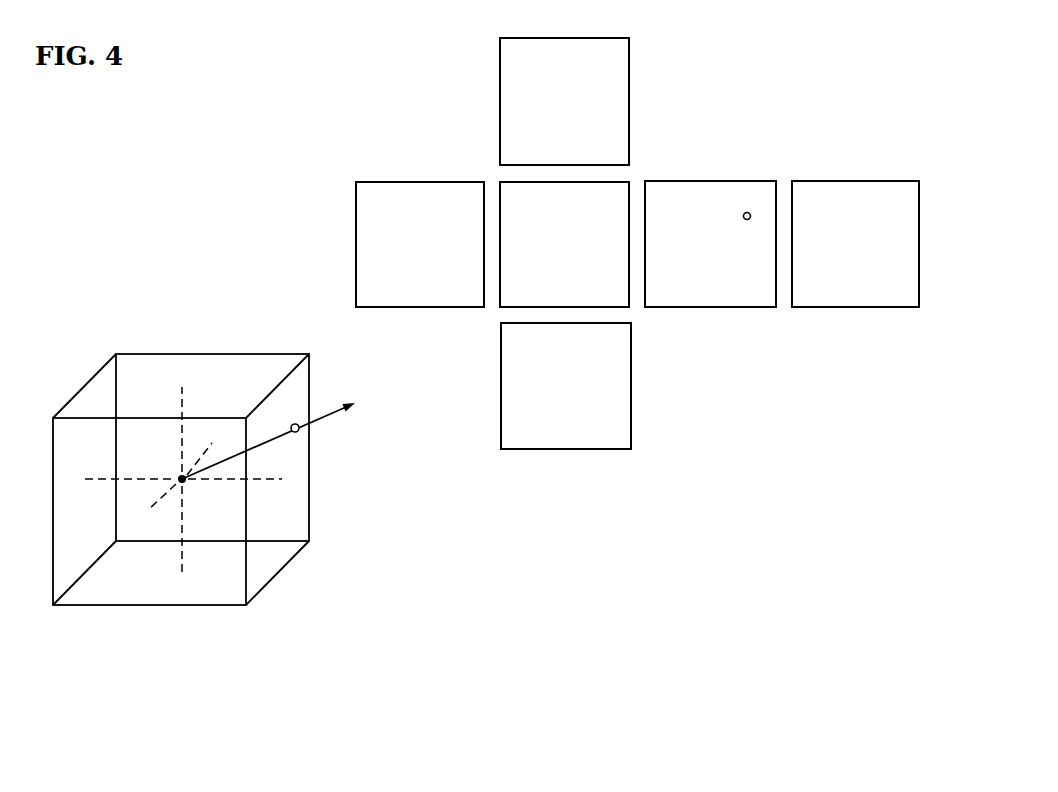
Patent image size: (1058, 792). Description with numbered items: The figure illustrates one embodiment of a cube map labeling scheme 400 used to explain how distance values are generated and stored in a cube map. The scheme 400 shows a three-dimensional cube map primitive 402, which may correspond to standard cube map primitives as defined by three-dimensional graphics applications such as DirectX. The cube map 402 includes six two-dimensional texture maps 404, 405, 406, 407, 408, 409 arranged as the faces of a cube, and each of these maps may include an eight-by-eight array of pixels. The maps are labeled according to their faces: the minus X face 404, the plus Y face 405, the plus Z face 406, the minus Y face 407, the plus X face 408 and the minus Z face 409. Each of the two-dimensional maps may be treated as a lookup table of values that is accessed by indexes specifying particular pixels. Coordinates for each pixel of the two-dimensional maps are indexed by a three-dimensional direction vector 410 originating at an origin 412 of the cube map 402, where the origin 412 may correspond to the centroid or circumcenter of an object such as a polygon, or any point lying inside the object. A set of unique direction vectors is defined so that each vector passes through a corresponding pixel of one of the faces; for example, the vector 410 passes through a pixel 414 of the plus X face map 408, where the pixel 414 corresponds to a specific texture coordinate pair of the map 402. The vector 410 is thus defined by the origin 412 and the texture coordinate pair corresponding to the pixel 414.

The cube map labeling scheme 400 is at (563, 593).
The 3D cube map primitive 402 is at (322, 246).
The 2D texture map 404 is at (473, 300).
The 2D texture map 405 is at (618, 160).
The 2D texture map 406 is at (618, 300).
The 2D texture map 407 is at (620, 442).
The 2D texture map 408 is at (765, 300).
The 2D texture map 409 is at (908, 300).
The 3D direction vector 410 is at (328, 418).
The origin 412 is at (180, 478).
The pixel 414 is at (298, 424).